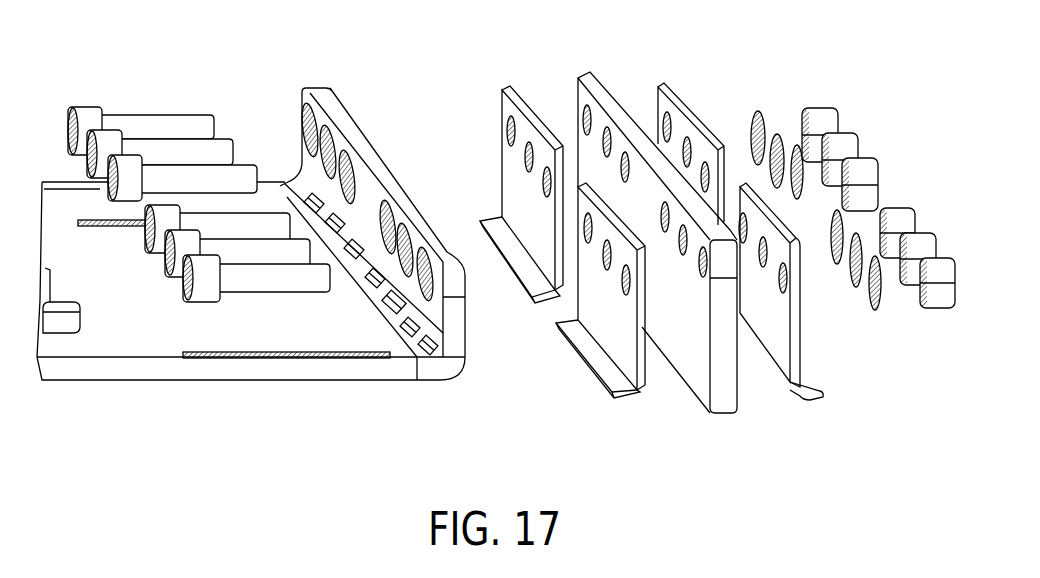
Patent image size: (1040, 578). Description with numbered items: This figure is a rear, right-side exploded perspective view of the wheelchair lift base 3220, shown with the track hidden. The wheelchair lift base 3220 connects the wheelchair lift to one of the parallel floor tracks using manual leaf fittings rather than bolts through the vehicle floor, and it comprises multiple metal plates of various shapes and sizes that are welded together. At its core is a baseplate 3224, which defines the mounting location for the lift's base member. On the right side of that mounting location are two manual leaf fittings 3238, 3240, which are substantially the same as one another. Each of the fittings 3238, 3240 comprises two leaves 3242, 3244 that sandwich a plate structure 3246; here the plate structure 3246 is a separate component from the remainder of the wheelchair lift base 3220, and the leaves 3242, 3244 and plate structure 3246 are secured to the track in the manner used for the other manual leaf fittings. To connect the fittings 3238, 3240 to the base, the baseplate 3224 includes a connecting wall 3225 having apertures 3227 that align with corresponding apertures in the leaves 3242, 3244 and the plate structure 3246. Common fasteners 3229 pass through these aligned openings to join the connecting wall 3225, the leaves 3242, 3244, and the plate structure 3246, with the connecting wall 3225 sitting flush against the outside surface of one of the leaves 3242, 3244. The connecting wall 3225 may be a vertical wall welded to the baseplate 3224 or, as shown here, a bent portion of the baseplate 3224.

The wheelchair lift base 3220 is at (368, 401).
The baseplate 3224 is at (281, 338).
The connecting wall 3225 is at (318, 95).
The apertures 3227 is at (413, 284).
The common fasteners 3229 is at (146, 84).
The manual leaf fitting 3240 is at (468, 113).
The leaf 3242 is at (623, 402).
The leaf 3244 is at (812, 396).
The plate structure 3246 is at (725, 416).
The manual leaf fitting 3238 is at (852, 360).